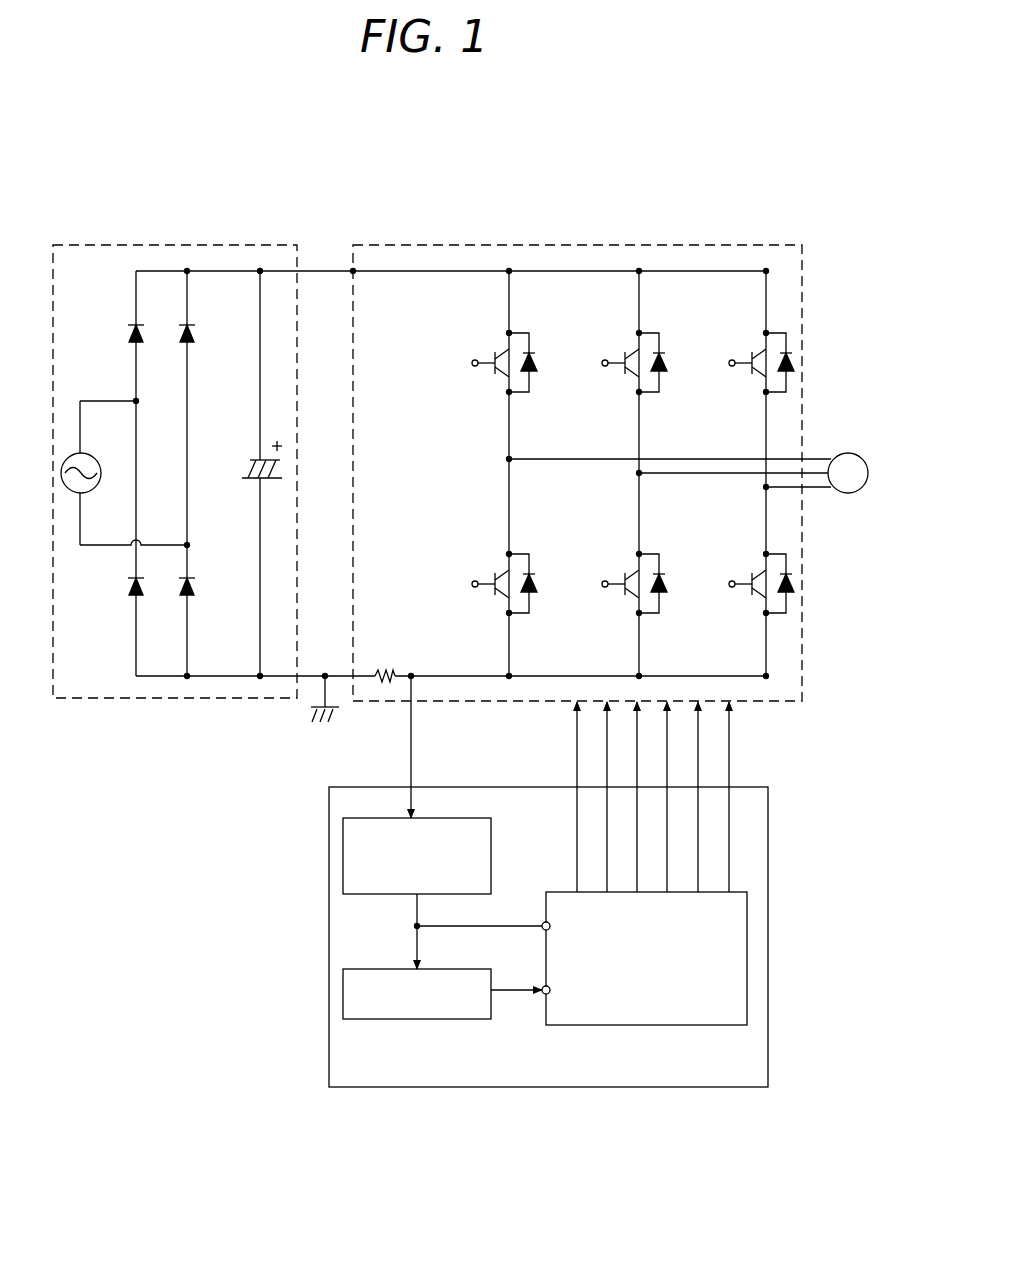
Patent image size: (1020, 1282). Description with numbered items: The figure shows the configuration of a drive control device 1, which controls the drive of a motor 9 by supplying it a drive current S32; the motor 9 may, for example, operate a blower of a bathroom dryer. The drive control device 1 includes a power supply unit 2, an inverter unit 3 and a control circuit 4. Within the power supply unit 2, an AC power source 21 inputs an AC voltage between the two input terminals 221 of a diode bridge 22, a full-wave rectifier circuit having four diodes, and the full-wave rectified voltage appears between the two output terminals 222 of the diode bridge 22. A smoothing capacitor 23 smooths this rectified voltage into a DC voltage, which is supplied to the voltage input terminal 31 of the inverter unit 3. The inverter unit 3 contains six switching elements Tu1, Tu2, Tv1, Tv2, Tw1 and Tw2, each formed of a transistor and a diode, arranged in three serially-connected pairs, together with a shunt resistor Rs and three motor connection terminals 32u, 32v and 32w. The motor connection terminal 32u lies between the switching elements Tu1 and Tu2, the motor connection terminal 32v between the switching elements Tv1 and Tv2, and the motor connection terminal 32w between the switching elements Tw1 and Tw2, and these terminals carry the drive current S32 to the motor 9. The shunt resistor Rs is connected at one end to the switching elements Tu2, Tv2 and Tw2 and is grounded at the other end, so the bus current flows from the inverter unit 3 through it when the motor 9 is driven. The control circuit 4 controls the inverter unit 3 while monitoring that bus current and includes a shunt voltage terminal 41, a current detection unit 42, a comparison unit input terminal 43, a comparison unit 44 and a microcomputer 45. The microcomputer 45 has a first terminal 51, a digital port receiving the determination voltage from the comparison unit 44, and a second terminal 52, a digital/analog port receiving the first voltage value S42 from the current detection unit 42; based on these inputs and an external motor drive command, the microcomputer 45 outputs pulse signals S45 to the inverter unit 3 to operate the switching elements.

The drive control device 1 is at (633, 203).
The power supply unit 2 is at (228, 244).
The inverter unit 3 is at (697, 244).
The control circuit 4 is at (665, 1088).
The motor 9 is at (850, 454).
The AC power source 21 is at (95, 462).
The diode bridge 22 is at (155, 268).
The smoothing capacitor 23 is at (250, 460).
The voltage input terminal 31 is at (352, 270).
The motor connection terminal 32u is at (508, 459).
The motor connection terminal 32v is at (638, 473).
The motor connection terminal 32w is at (765, 487).
The shunt voltage terminal 41 is at (413, 674).
The current detection unit 42 is at (343, 826).
The comparison unit input terminal 43 is at (416, 926).
The comparison unit 44 is at (343, 977).
The microcomputer 45 is at (705, 1026).
The first terminal 51 is at (543, 996).
The second terminal 52 is at (543, 921).
The input terminals 221 is at (135, 401).
The output terminals 222 is at (188, 272).
The shunt resistor Rs is at (387, 663).
The drive current S32 is at (817, 489).
The first voltage value S42 is at (418, 905).
The pulse signal S45 is at (730, 748).
The switching element Tu1 is at (503, 374).
The switching element Tv1 is at (632, 374).
The switching element Tw1 is at (756, 374).
The switching element Tu2 is at (503, 596).
The switching element Tv2 is at (632, 596).
The switching element Tw2 is at (756, 596).